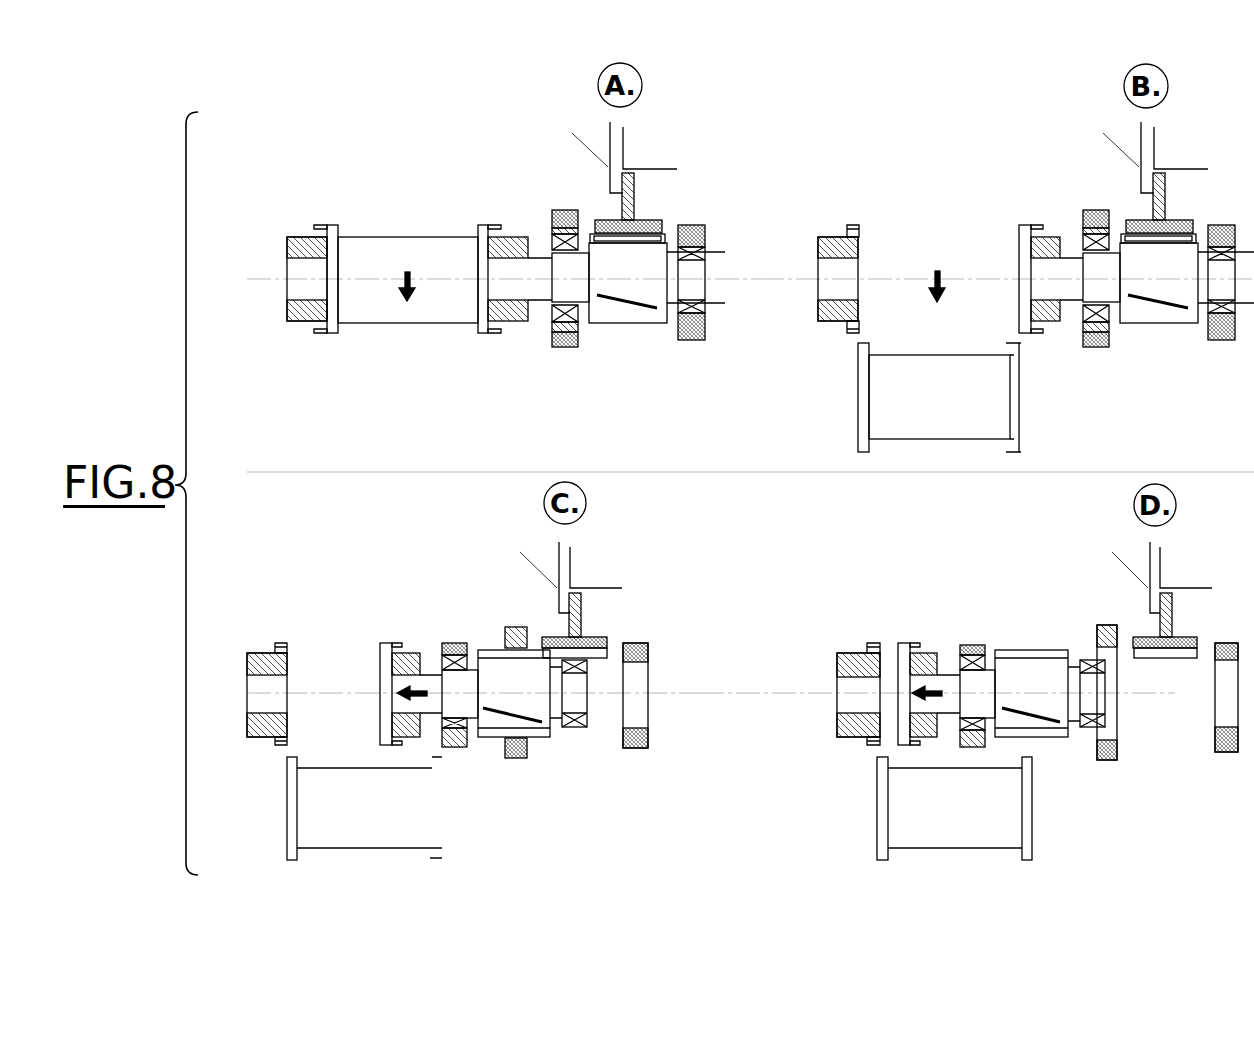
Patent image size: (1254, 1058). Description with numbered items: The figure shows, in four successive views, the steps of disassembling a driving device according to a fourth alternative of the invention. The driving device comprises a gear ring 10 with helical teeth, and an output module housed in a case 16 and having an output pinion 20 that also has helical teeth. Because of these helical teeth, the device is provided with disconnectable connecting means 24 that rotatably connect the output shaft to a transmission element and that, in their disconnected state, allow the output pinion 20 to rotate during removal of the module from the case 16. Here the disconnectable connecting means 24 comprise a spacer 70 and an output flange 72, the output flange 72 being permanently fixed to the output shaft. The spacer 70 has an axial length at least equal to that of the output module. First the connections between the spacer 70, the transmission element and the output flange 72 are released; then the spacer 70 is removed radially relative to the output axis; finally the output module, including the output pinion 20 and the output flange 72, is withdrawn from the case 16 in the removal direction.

In FIG. 8A, the gear ring 10 is at (645, 225).
In FIG. 8B, the gear ring 10 is at (1175, 223).
In FIG. 8C, the gear ring 10 is at (590, 640).
In FIG. 8D, the gear ring 10 is at (1180, 640).
In FIG. 8A, the case 16 is at (690, 330).
In FIG. 8B, the case 16 is at (1222, 330).
In FIG. 8C, the case 16 is at (635, 748).
In FIG. 8D, the case 16 is at (1225, 748).
In FIG. 8A, the output pinion 20 is at (605, 310).
In FIG. 8B, the output pinion 20 is at (1153, 310).
In FIG. 8C, the output pinion 20 is at (537, 728).
In FIG. 8D, the output pinion 20 is at (1045, 728).
In FIG. 8A, the disconnectable connecting means 24 is at (408, 267).
In FIG. 8A, the spacer 70 is at (453, 248).
In FIG. 8B, the spacer 70 is at (952, 425).
In FIG. 8C, the spacer 70 is at (350, 830).
In FIG. 8D, the spacer 70 is at (942, 830).
In FIG. 8A, the output flange 72 is at (518, 315).
In FIG. 8B, the output flange 72 is at (1047, 313).
In FIG. 8C, the output flange 72 is at (405, 655).
In FIG. 8D, the output flange 72 is at (918, 655).